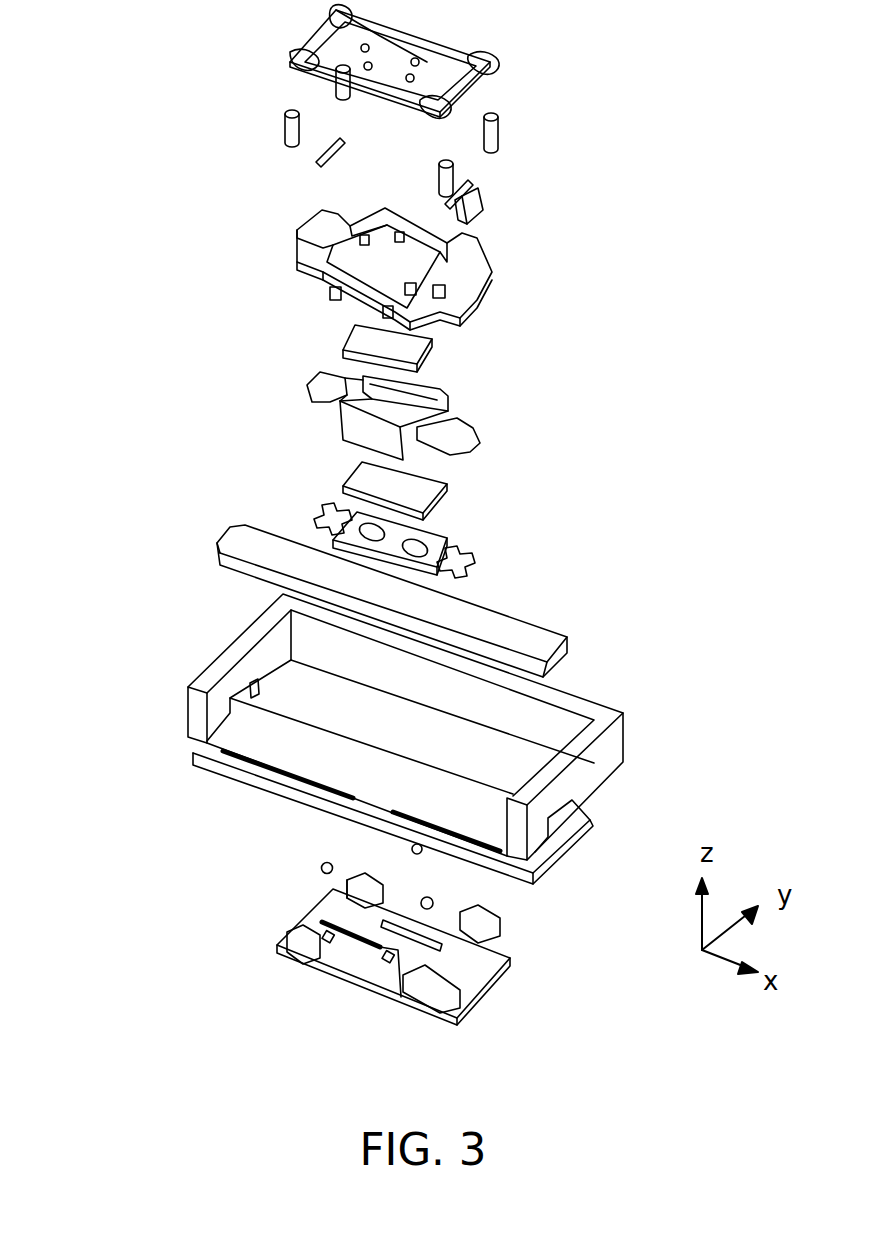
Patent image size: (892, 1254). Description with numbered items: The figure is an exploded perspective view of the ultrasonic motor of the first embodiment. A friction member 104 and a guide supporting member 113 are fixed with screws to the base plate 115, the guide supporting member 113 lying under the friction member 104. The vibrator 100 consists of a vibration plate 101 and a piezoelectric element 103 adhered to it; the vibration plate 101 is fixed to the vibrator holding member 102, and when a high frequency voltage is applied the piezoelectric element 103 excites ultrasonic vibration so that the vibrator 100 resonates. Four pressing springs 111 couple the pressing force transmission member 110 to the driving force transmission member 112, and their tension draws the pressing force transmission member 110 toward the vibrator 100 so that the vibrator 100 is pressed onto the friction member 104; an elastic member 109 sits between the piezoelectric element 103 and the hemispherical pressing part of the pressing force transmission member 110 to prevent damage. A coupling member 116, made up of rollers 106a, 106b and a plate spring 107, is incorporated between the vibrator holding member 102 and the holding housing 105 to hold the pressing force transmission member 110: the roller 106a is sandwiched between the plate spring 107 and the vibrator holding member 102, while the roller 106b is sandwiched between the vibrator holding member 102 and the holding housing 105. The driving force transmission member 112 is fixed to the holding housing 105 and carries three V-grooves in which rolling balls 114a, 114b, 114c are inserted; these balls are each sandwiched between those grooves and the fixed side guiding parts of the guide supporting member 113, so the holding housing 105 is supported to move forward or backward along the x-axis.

The vibrator 100 is at (278, 462).
The vibration plate 101 is at (297, 515).
The vibrator holding member 102 is at (300, 404).
The piezoelectric element 103 is at (320, 478).
The friction member 104 is at (210, 547).
The holding housing 105 is at (288, 240).
The roller 106a is at (303, 172).
The roller 106b is at (478, 187).
The plate spring 107 is at (478, 217).
The elastic member 109 is at (343, 345).
The pressing force transmission member 110 is at (502, 67).
The pressing springs 111 is at (323, 82).
The driving force transmission member 112 is at (280, 935).
The guide supporting member 113 is at (210, 775).
The rolling ball 114a is at (317, 870).
The rolling ball 114b is at (392, 848).
The rolling ball 114c is at (432, 900).
The base plate 115 is at (210, 660).
The coupling member 116 is at (601, 233).